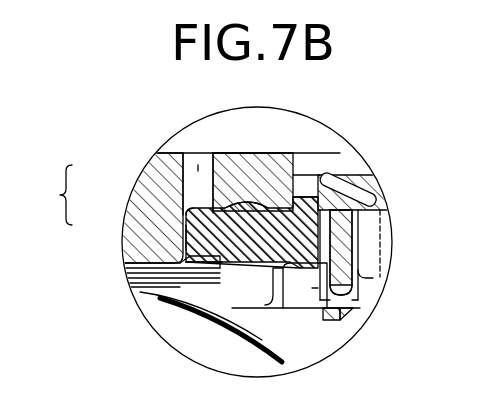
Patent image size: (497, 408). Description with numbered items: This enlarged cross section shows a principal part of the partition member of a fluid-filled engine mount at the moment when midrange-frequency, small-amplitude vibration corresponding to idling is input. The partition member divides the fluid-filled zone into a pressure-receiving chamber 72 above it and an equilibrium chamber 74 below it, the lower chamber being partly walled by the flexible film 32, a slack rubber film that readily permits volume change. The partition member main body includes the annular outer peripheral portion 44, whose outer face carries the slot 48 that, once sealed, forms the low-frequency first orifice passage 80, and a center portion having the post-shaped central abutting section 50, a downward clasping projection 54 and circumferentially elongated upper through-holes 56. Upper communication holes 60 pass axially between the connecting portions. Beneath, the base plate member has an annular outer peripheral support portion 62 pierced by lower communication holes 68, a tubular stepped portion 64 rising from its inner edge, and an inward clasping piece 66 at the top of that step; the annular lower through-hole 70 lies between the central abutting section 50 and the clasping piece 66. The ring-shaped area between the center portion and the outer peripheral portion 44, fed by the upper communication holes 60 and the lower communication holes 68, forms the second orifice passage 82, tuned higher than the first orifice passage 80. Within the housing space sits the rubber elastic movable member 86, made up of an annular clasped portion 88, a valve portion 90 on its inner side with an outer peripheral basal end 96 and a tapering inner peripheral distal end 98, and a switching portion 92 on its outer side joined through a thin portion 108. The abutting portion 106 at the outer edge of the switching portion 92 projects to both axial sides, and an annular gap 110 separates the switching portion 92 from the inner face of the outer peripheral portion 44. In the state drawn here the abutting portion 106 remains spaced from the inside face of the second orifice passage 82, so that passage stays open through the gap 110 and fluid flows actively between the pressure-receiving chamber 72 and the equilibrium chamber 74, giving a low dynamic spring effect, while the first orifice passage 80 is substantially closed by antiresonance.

The flexible film 32 is at (172, 318).
The outer peripheral portion 44 is at (358, 195).
The slot 48 is at (360, 274).
The central abutting section 50 is at (137, 243).
The clasping projection 54 is at (237, 213).
The upper through-holes 56 is at (193, 170).
The upper communication holes 60 is at (350, 192).
The outer peripheral support portion 62 is at (348, 312).
The stepped portion 64 is at (262, 245).
The clasping piece 66 is at (222, 262).
The lower communication holes 68 is at (298, 288).
The lower through-hole 70 is at (180, 278).
The pressure-receiving chamber 72 is at (292, 146).
The equilibrium chamber 74 is at (277, 349).
The first orifice passage 80 is at (372, 243).
The second orifice passage 82 is at (316, 302).
The elastic movable member 86 is at (250, 218).
The clasped portion 88 is at (250, 262).
The valve portion 90 is at (55, 195).
The switching portion 92 is at (325, 240).
The outer peripheral basal end 96 is at (183, 240).
The inner peripheral distal end 98 is at (183, 215).
The abutting portion 106 is at (340, 210).
The thin portion 108 is at (315, 200).
The gap 110 is at (320, 258).